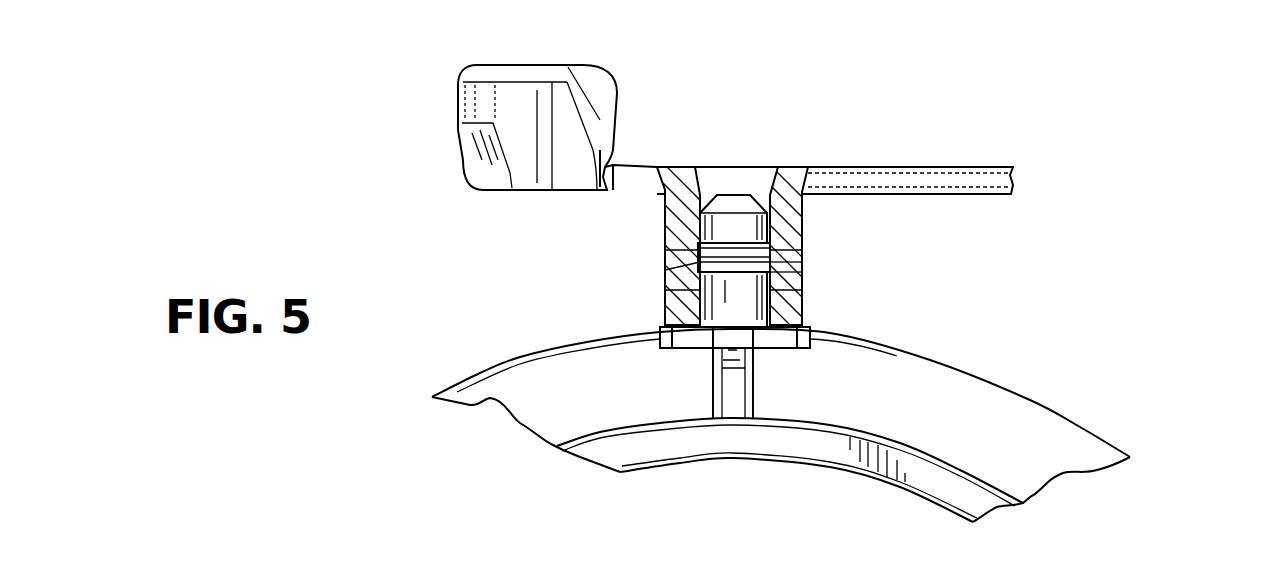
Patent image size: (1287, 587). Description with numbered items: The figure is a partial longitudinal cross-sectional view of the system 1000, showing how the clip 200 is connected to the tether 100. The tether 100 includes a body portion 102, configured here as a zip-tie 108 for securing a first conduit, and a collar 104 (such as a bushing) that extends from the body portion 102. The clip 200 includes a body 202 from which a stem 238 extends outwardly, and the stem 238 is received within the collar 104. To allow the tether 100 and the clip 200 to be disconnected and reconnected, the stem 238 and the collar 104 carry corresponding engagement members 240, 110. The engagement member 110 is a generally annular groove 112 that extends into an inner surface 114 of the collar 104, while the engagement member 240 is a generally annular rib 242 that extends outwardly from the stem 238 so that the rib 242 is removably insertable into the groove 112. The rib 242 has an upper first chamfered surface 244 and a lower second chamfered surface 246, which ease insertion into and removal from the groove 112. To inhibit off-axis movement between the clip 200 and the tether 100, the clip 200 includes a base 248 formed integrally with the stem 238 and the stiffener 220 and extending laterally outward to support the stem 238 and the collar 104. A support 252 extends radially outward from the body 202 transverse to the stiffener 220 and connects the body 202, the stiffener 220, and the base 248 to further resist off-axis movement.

The tether 100 is at (922, 113).
The system 1000 is at (1140, 140).
The body portion 102 is at (957, 163).
The collar 104 is at (803, 238).
The zip-tie 108 is at (847, 182).
The engagement member 110 is at (785, 265).
The groove 112 is at (773, 252).
The inner surface 114 is at (747, 258).
The clip 200 is at (817, 400).
The body 202 is at (1112, 418).
The stiffener 220 is at (1057, 403).
The stem 238 is at (733, 170).
The engagement member 240 is at (727, 240).
The rib 242 is at (768, 200).
The first chamfered surface 244 is at (683, 243).
The second chamfered surface 246 is at (683, 285).
The base 248 is at (680, 352).
The support 252 is at (733, 388).